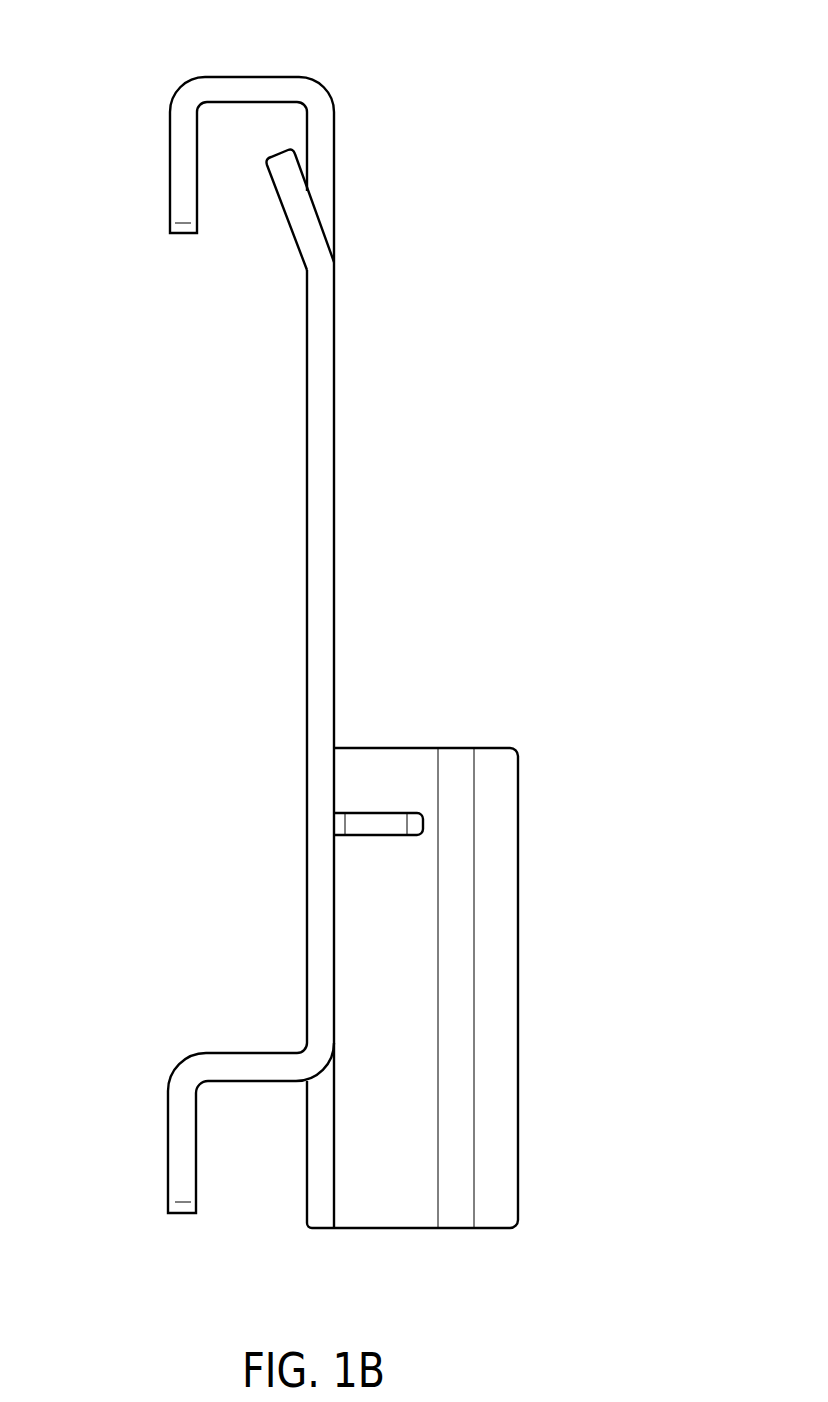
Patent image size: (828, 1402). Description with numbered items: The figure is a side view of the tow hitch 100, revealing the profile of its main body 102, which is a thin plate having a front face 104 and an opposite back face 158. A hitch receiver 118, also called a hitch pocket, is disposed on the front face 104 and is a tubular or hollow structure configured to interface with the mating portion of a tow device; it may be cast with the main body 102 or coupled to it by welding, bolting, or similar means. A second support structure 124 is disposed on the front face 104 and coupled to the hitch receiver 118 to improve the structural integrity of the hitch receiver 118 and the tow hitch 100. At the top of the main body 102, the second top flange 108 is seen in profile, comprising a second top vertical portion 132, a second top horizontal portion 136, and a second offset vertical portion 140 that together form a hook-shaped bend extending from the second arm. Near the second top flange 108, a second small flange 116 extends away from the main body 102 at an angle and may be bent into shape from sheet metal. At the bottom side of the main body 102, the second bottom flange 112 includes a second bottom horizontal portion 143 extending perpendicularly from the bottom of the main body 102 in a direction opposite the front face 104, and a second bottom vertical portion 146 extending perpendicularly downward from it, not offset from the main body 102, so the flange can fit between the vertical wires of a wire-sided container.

The tow hitch 100 is at (563, 146).
The main body 102 is at (315, 490).
The front face 104 is at (335, 407).
The second top flange 108 is at (281, 55).
The second bottom flange 112 is at (141, 1224).
The second small flange 116 is at (285, 180).
The hitch receiver 118 is at (515, 948).
The second support structure 124 is at (400, 818).
The second top vertical portion 132 is at (323, 147).
The second top horizontal portion 136 is at (233, 93).
The second offset vertical portion 140 is at (180, 147).
The second bottom horizontal portion 143 is at (270, 1057).
The second bottom vertical portion 146 is at (177, 1158).
The back face 158 is at (307, 617).